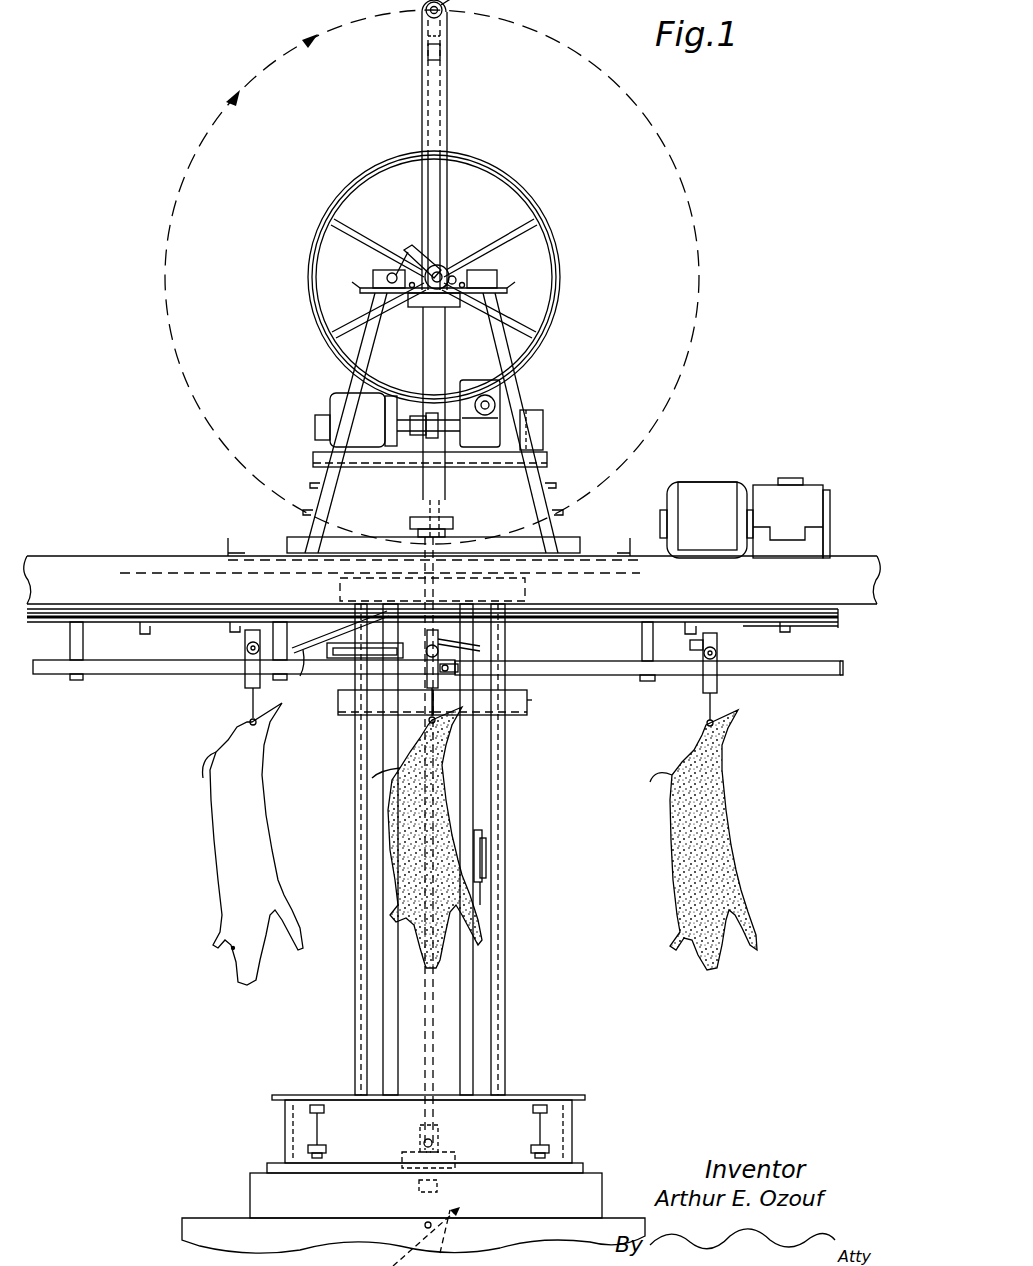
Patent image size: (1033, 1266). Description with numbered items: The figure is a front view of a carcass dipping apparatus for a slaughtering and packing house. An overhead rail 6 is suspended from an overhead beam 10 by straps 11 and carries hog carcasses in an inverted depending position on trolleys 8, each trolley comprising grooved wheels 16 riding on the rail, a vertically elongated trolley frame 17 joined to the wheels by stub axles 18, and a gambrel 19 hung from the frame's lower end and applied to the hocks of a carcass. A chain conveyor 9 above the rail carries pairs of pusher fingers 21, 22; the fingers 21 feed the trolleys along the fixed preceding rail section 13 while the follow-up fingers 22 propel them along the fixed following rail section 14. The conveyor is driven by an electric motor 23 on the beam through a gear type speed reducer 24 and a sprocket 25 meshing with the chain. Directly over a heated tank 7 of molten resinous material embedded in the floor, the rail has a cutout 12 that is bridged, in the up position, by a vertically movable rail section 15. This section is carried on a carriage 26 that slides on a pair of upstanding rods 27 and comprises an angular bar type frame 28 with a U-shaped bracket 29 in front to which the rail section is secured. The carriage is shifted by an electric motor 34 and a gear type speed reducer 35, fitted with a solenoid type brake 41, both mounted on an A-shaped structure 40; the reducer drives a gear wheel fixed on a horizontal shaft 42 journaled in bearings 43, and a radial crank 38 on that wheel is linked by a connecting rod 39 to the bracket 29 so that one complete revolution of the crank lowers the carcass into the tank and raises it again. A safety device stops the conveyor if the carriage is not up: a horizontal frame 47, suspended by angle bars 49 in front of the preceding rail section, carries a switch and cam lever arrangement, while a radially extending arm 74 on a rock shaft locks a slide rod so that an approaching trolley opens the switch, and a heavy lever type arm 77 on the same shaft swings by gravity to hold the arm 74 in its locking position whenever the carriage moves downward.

The overhead rail 6 is at (160, 678).
The tank 7 is at (285, 1153).
The trolley 8 is at (243, 648).
The conveyor 9 is at (160, 625).
The overhead beam 10 is at (690, 588).
The strap 11 is at (642, 643).
The cutout 12 is at (400, 690).
The preceding rail section 13 is at (205, 674).
The following rail section 14 is at (580, 676).
The vertically movable rail section 15 is at (458, 668).
The grooved wheel 16 is at (698, 650).
The trolley frame 17 is at (718, 686).
The stub axle 18 is at (717, 653).
The gambrel 19 is at (708, 702).
The pusher finger 21 is at (235, 628).
The follow-up pusher finger 22 is at (142, 640).
The electric motor 23 is at (718, 482).
The gear type speed reducer 24 is at (815, 512).
The sprocket 25 is at (833, 628).
The carriage 26 is at (530, 712).
The upstanding rod 27 is at (505, 750).
The angular bar type frame 28 is at (510, 716).
The U-shaped bracket 29 is at (470, 641).
The electric motor 34 is at (330, 405).
The gear type speed reducer 35 is at (500, 400).
The crank 38 is at (447, 78).
The connecting rod 39 is at (447, 122).
The A-shaped structure 40 is at (545, 346).
The solenoid type brake 41 is at (543, 422).
The horizontal shaft 42 is at (420, 262).
The bearing 43 is at (452, 275).
The horizontal frame 47 is at (353, 650).
The angle bar 49 is at (345, 635).
The radially extending arm 74 is at (440, 610).
The lever type arm 77 is at (299, 672).